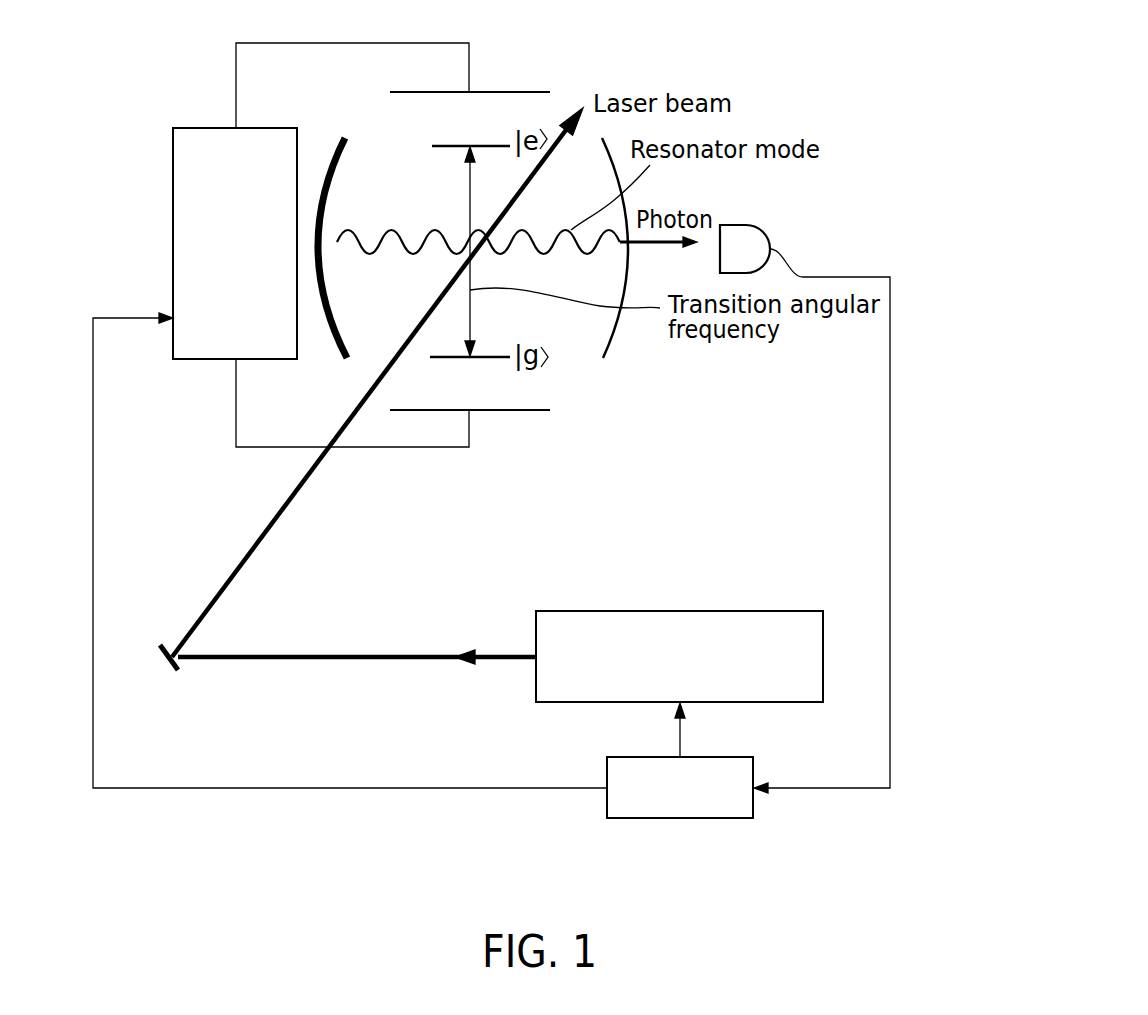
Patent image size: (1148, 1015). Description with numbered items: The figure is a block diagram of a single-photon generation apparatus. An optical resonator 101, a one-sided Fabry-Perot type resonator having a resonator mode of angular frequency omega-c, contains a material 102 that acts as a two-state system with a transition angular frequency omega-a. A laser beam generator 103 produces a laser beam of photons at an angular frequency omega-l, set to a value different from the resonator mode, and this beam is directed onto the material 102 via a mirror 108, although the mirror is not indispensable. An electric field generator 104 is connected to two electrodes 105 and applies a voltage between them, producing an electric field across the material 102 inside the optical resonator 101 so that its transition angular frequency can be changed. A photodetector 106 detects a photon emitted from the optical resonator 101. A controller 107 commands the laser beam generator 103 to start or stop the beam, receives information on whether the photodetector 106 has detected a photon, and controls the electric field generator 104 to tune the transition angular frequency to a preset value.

The optical resonator 101 is at (385, 188).
The material 102 is at (565, 322).
The laser beam generator 103 is at (680, 611).
The electric field generator 104 is at (173, 175).
The electrodes 105 is at (507, 92).
The photodetector 106 is at (768, 226).
The controller 107 is at (682, 818).
The mirror 108 is at (170, 672).